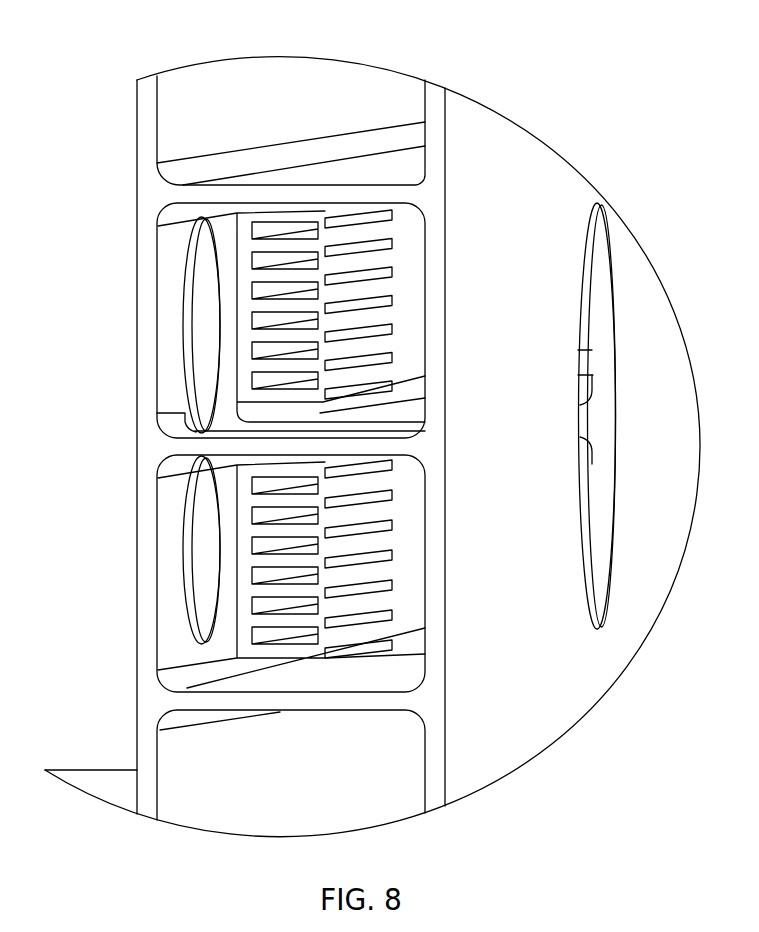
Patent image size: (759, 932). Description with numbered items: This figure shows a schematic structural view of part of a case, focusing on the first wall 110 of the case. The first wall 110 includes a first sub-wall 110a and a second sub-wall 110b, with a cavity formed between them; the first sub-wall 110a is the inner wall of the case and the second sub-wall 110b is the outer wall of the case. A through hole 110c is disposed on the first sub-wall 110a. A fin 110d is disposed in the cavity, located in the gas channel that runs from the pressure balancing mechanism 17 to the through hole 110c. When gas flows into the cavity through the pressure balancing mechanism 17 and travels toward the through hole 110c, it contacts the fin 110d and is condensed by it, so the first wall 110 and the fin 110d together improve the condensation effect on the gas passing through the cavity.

The first wall 110 is at (362, 424).
The first sub-wall 110a is at (148, 628).
The second sub-wall 110b is at (440, 125).
The through hole 110c is at (192, 512).
The fin 110d is at (253, 308).
The pressure balancing mechanism 17 is at (603, 282).